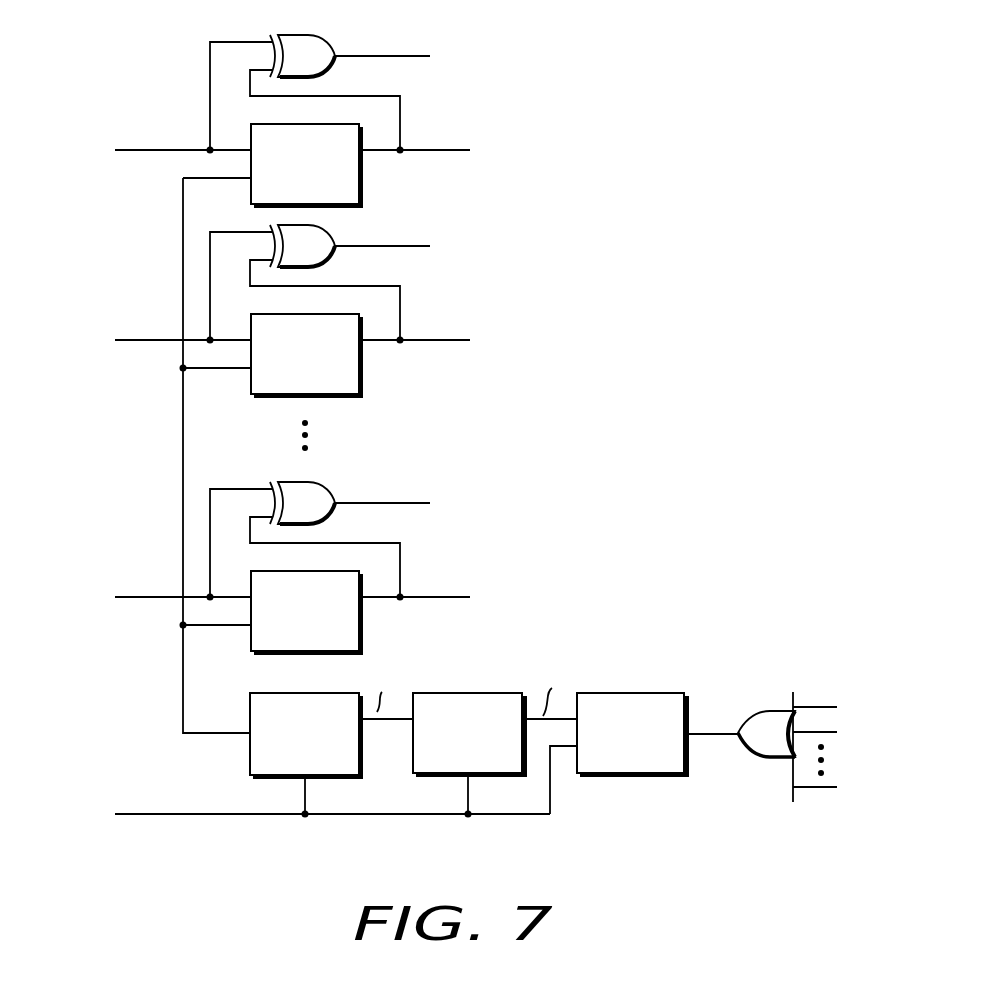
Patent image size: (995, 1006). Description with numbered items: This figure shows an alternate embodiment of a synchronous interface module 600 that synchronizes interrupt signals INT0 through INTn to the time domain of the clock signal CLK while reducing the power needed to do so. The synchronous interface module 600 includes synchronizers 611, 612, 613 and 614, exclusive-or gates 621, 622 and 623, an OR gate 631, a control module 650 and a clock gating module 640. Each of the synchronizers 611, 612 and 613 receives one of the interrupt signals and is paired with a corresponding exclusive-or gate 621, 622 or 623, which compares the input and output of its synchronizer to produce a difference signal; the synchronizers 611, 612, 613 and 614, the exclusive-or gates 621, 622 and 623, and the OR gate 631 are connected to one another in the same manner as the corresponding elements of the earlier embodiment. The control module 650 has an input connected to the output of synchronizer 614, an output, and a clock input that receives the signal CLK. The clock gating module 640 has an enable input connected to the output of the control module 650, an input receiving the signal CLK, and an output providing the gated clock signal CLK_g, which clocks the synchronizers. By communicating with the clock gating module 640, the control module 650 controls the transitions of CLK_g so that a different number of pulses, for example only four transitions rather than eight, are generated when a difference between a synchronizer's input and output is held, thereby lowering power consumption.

The synchronous interface module 600 is at (647, 882).
The synchronizer 611 is at (333, 189).
The synchronizer 612 is at (333, 379).
The synchronizer 613 is at (333, 636).
The synchronizer 614 is at (638, 693).
The exclusive-or gate 621 is at (340, 62).
The exclusive-or gate 622 is at (340, 252).
The exclusive-or gate 623 is at (318, 482).
The OR gate 631 is at (775, 711).
The clock gating module 640 is at (250, 755).
The control module 650 is at (460, 693).